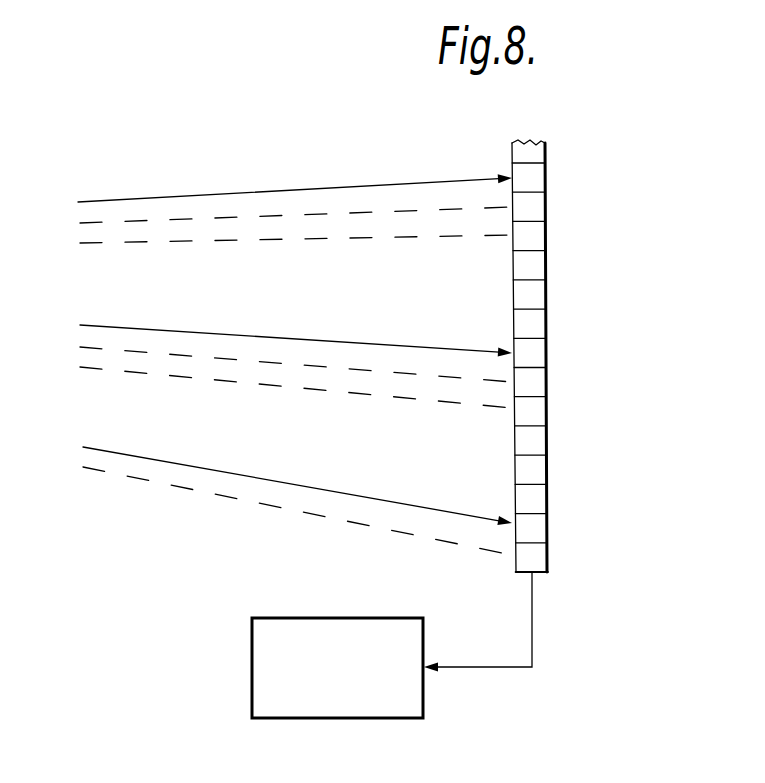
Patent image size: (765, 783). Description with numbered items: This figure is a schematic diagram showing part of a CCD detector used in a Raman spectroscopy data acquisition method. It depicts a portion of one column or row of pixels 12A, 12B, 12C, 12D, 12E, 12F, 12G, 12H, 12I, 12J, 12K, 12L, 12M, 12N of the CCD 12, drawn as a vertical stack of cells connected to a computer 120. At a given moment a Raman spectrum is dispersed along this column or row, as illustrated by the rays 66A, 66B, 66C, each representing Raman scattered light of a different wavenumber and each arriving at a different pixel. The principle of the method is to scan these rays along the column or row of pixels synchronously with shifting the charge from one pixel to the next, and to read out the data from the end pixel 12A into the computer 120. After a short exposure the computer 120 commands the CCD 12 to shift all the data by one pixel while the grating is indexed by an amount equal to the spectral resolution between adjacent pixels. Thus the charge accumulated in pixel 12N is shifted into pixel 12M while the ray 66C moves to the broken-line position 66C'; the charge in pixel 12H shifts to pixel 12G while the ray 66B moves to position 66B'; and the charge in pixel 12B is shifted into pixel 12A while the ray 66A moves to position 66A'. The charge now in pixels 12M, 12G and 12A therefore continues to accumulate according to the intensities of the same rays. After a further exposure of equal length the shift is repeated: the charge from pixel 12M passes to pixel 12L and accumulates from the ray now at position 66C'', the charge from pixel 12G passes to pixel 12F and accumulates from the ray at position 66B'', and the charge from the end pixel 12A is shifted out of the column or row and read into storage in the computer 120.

The CCD 12 is at (551, 142).
The end pixel 12A is at (533, 572).
The pixel 12B is at (533, 541).
The pixel 12C is at (533, 509).
The pixel 12D is at (533, 479).
The pixel 12E is at (533, 449).
The pixel 12F is at (533, 419).
The pixel 12G is at (533, 389).
The pixel 12H is at (533, 359).
The pixel 12I is at (533, 327).
The pixel 12J is at (533, 297).
The pixel 12K is at (533, 267).
The pixel 12L is at (533, 237).
The pixel 12M is at (533, 206).
The pixel 12N is at (533, 176).
The ray 66A is at (297, 470).
The shifted position of ray 66A 66A' is at (297, 491).
The ray 66B is at (296, 321).
The shifted position of ray 66B 66B' is at (296, 332).
The further shifted position of ray 66B 66B'' is at (296, 345).
The ray 66C is at (295, 160).
The shifted position of ray 66C 66C' is at (296, 169).
The further shifted position of ray 66C 66C'' is at (296, 179).
The computer 120 is at (252, 653).